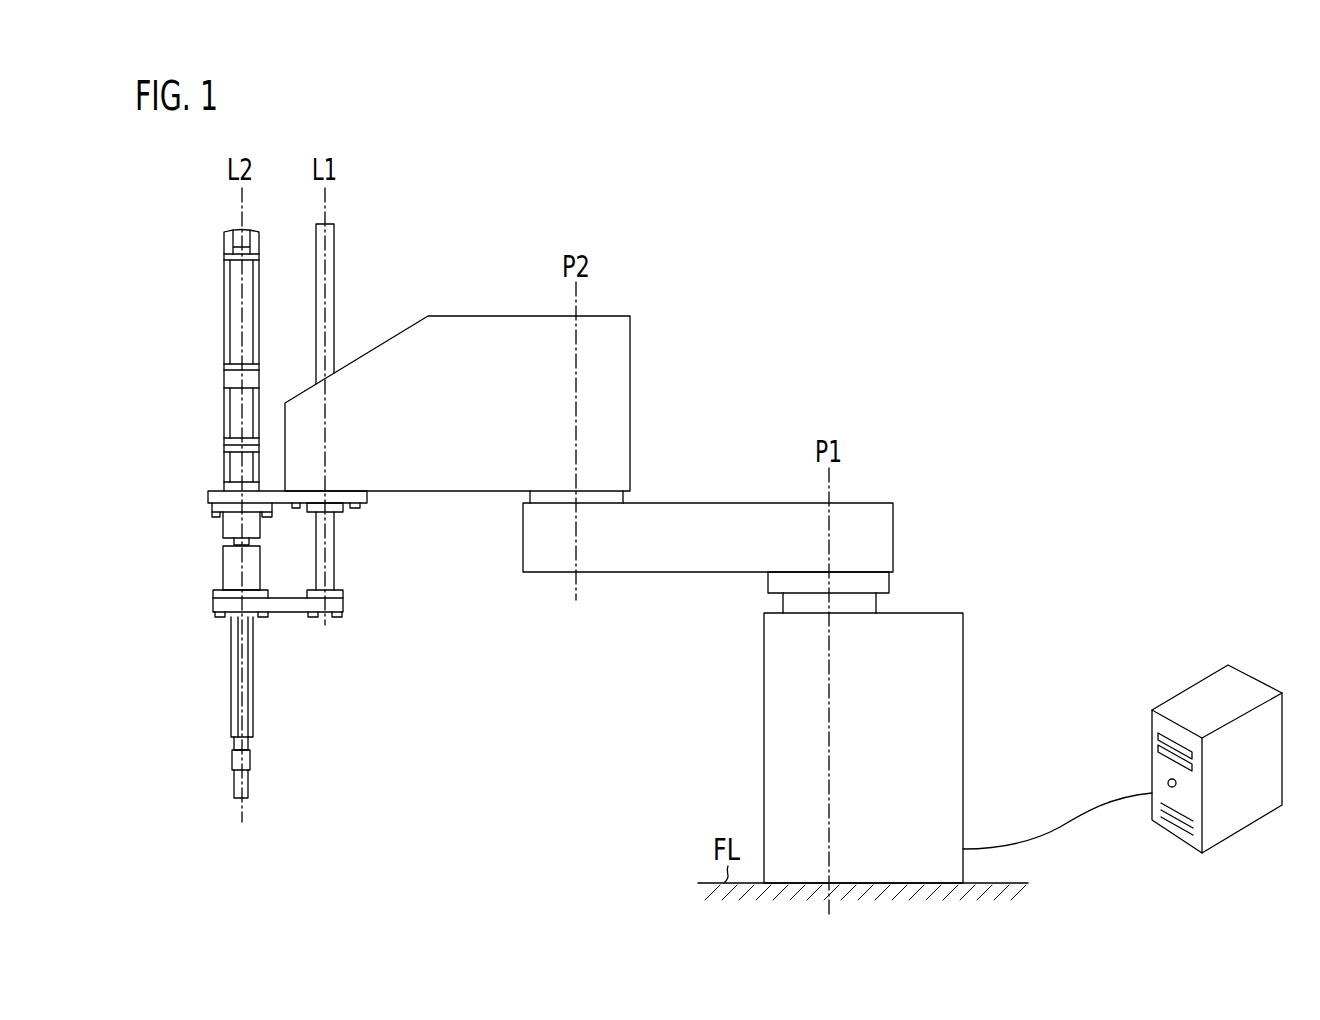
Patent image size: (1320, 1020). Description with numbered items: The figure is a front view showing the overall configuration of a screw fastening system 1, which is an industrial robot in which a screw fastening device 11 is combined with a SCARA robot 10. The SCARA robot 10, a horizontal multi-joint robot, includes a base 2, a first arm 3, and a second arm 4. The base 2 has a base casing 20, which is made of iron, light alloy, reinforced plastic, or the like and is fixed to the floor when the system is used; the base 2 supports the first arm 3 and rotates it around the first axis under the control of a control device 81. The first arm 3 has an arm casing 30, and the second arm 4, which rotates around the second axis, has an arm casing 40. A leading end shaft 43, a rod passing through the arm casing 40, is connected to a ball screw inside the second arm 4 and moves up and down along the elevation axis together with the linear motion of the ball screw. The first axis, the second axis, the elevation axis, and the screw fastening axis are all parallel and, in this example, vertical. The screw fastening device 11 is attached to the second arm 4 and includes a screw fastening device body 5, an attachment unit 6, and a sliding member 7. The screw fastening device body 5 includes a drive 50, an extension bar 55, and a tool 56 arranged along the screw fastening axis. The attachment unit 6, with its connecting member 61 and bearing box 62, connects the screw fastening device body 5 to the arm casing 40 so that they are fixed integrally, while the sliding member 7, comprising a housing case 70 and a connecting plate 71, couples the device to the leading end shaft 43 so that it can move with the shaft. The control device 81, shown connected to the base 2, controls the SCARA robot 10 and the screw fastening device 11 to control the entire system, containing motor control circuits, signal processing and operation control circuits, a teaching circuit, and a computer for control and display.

The screw fastening system 1 is at (678, 130).
The SCARA robot 10 is at (753, 317).
The base 2 is at (963, 671).
The base casing 20 is at (955, 747).
The first arm 3 is at (893, 516).
The arm casing 30 is at (882, 552).
The second arm 4 is at (631, 397).
The arm casing 40 is at (619, 446).
The leading end shaft 43 is at (337, 273).
The screw fastening device body 5 is at (256, 206).
The drive 50 is at (224, 309).
The extension bar 55 is at (254, 709).
The tool 56 is at (249, 782).
The screw fastening device 11 is at (205, 428).
The attachment unit 6 is at (200, 517).
The connecting member 61 is at (363, 505).
The bearing box 62 is at (222, 525).
The sliding member 7 is at (212, 563).
The housing case 70 is at (220, 578).
The connecting plate 71 is at (288, 613).
The control device 81 is at (1229, 838).